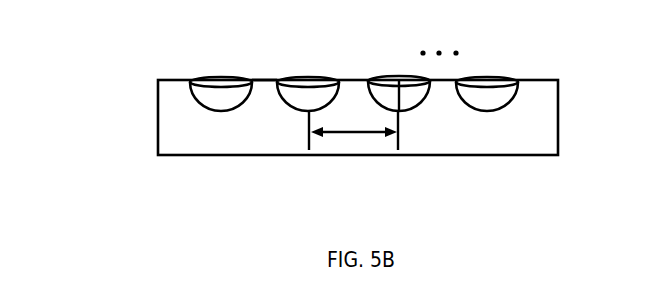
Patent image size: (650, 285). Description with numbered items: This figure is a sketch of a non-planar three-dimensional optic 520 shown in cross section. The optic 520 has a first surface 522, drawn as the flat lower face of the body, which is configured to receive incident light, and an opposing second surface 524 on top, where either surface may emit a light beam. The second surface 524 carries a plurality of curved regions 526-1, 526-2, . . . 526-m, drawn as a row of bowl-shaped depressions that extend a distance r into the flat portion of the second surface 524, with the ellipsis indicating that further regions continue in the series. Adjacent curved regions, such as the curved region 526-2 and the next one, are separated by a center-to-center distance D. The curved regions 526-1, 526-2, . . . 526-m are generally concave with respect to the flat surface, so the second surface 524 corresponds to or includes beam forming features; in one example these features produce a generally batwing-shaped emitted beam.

The 3-D optic 520 is at (112, 33).
The first surface 522 is at (219, 163).
The second surface 524 is at (257, 68).
The curved region 526-1 is at (227, 82).
The curved region 526-2 is at (307, 82).
The curved region 526-m is at (488, 85).